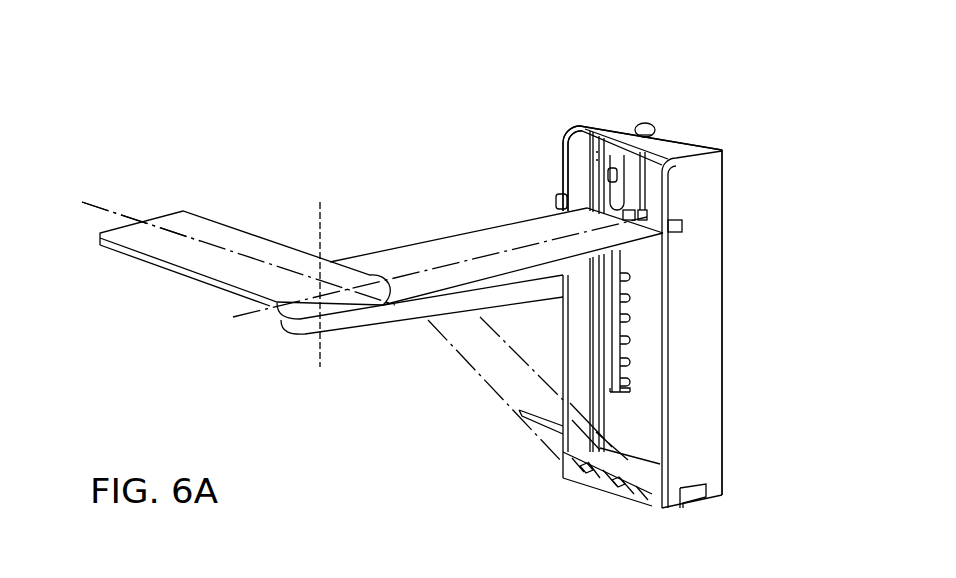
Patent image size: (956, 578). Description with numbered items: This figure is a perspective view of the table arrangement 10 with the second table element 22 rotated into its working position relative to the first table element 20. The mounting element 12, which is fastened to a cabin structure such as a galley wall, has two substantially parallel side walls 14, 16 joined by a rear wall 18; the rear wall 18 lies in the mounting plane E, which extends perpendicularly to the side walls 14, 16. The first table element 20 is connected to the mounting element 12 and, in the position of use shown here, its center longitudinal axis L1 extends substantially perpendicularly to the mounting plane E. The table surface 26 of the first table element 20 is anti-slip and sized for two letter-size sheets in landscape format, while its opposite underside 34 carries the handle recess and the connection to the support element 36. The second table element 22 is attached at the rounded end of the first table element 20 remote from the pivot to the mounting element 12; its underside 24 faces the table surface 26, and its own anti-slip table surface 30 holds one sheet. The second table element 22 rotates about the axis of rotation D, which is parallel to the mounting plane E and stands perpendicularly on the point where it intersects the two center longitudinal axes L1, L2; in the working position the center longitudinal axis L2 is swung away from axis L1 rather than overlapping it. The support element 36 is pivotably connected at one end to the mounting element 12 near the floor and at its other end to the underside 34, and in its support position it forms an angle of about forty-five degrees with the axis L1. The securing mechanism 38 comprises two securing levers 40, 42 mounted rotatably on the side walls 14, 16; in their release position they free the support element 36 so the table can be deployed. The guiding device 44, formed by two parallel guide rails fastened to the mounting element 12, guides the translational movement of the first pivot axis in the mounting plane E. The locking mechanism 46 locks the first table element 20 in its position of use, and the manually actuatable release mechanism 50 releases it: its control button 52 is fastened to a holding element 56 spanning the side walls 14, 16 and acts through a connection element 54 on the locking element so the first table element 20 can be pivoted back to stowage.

The table arrangement 10 is at (677, 88).
The mounting element 12 is at (729, 261).
The side wall 14 is at (716, 301).
The side wall 16 is at (582, 126).
The rear wall 18 is at (650, 381).
The first table element 20 is at (371, 257).
The second table element 22 is at (214, 217).
The underside 24 is at (203, 279).
The table surface 26 is at (434, 280).
The table surface 30 is at (253, 250).
The underside 34 is at (513, 283).
The support element 36 is at (490, 387).
The securing mechanism 38 is at (546, 182).
The securing lever 40 is at (556, 202).
The securing lever 42 is at (684, 228).
The guiding device 44 is at (607, 426).
The locking mechanism 46 is at (668, 194).
The release mechanism 50 is at (646, 107).
The control button 52 is at (654, 128).
The connection element 54 is at (683, 153).
The holding element 56 is at (618, 127).
The mounting plane E is at (650, 336).
The axis of rotation D is at (322, 353).
The center longitudinal axis L1 is at (251, 313).
The center longitudinal axis L2 is at (105, 207).